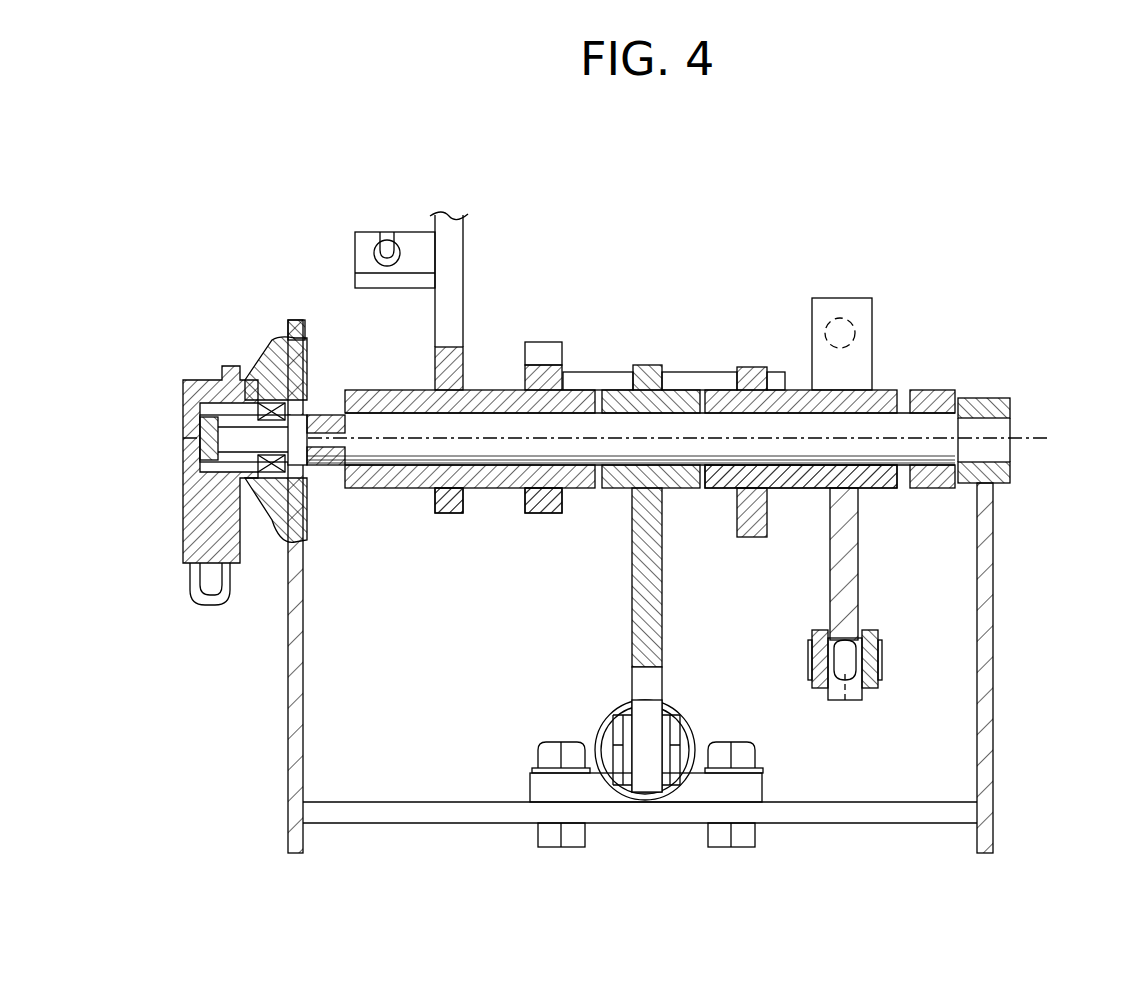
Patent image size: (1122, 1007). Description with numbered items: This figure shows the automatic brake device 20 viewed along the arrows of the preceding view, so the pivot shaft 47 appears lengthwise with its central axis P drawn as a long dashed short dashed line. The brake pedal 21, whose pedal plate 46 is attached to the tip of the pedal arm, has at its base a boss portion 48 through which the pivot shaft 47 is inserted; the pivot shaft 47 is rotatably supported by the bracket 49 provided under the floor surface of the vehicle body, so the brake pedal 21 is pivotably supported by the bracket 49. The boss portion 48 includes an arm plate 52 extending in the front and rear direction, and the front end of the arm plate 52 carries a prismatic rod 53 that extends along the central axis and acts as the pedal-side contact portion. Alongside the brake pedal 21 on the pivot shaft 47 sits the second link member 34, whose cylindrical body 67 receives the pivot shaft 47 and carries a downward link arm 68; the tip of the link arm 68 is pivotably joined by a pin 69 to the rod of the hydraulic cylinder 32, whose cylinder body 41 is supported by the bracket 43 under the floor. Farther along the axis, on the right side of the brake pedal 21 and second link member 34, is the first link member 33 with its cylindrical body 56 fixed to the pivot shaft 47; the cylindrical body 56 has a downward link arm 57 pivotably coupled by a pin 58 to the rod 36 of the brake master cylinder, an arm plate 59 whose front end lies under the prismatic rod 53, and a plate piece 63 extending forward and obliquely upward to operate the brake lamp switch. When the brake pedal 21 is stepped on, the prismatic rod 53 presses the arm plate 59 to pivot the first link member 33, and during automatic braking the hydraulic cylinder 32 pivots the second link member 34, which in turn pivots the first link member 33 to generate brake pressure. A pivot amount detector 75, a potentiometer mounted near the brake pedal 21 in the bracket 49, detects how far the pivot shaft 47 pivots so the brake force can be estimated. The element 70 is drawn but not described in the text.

The automatic brake device 20 is at (1008, 210).
The brake pedal 21 is at (463, 258).
The hydraulic cylinder 32 is at (612, 702).
The first link member 33 is at (882, 390).
The second link member 34 is at (673, 390).
The rod 36 is at (845, 700).
The cylinder body 41 is at (688, 712).
The bracket 43 is at (437, 800).
The pedal plate 46 is at (435, 315).
The pivot shaft 47 is at (1008, 432).
The boss portion 48 is at (495, 490).
The bracket 49 is at (288, 680).
The arm plate 52 is at (545, 342).
The prismatic rod 53 is at (612, 372).
The cylindrical body 56 is at (790, 490).
The link arm 57 is at (858, 570).
The pin 58 is at (882, 665).
The arm plate 59 is at (744, 540).
The plate piece 63 is at (857, 298).
The cylindrical body 67 is at (612, 490).
The link arm 68 is at (662, 620).
The pin 69 is at (612, 745).
The protrusion 70 is at (648, 365).
The pivot amount detector 75 is at (183, 418).